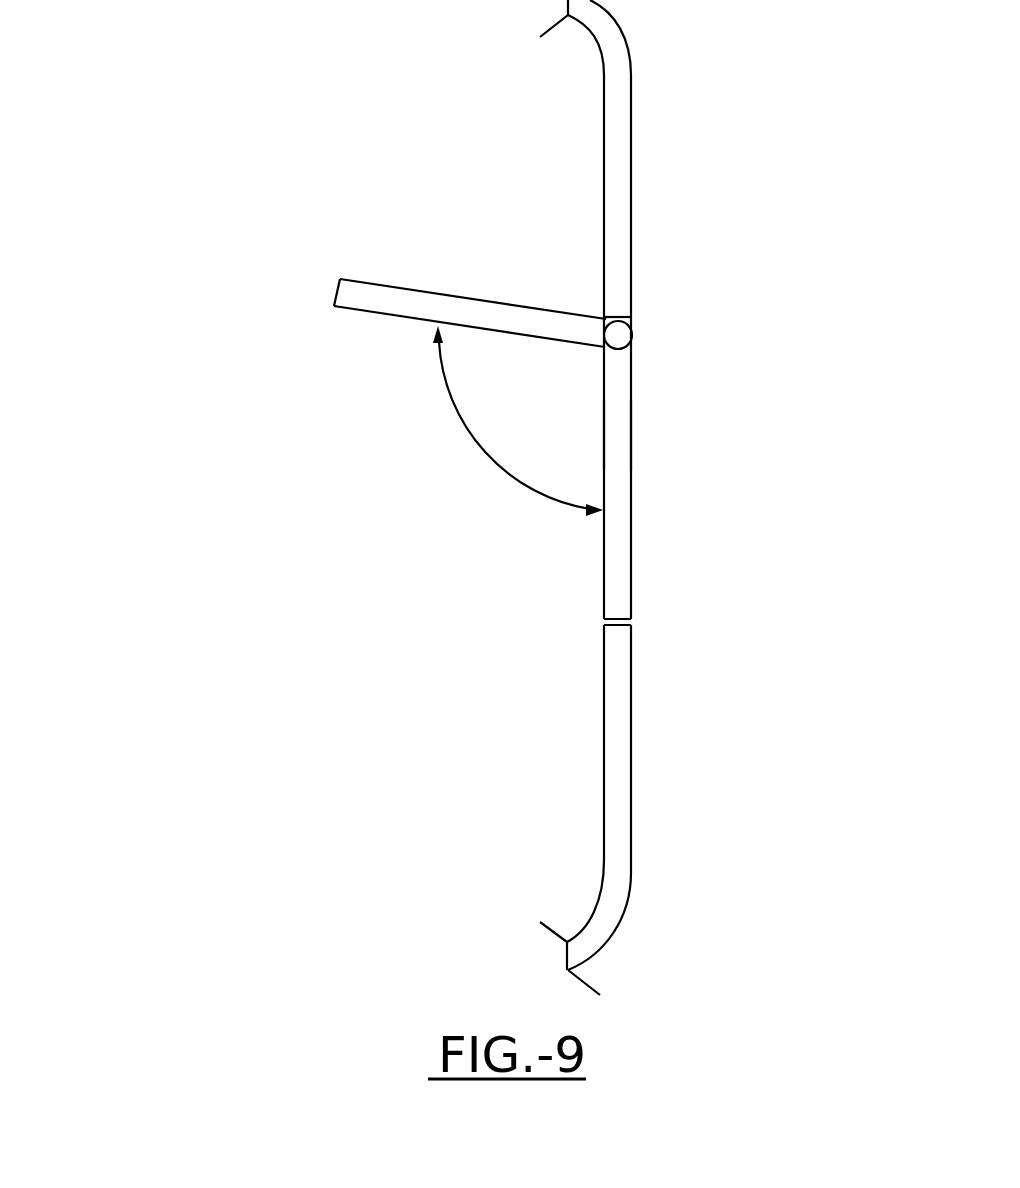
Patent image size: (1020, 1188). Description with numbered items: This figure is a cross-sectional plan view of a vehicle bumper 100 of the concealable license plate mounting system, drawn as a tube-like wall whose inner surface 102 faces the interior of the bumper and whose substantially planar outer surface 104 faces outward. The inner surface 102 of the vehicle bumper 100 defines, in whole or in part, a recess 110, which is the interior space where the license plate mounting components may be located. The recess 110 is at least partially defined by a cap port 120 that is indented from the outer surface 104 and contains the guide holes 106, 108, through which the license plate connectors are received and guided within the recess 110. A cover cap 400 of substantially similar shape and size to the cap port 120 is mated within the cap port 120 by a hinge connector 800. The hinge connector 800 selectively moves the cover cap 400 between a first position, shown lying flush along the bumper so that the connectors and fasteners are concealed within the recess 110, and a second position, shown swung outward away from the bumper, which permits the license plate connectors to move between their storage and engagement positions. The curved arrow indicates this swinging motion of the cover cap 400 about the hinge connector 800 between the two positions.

The vehicle bumper 100 is at (626, 262).
The inner surface 102 is at (604, 134).
The outer surface 104 is at (631, 183).
The guide hole 106 is at (650, 418).
The guide hole 108 is at (636, 420).
The recess 110 is at (390, 503).
The cap port 120 is at (645, 389).
The cover cap 400 is at (310, 292).
The hinge connector 800 is at (650, 322).